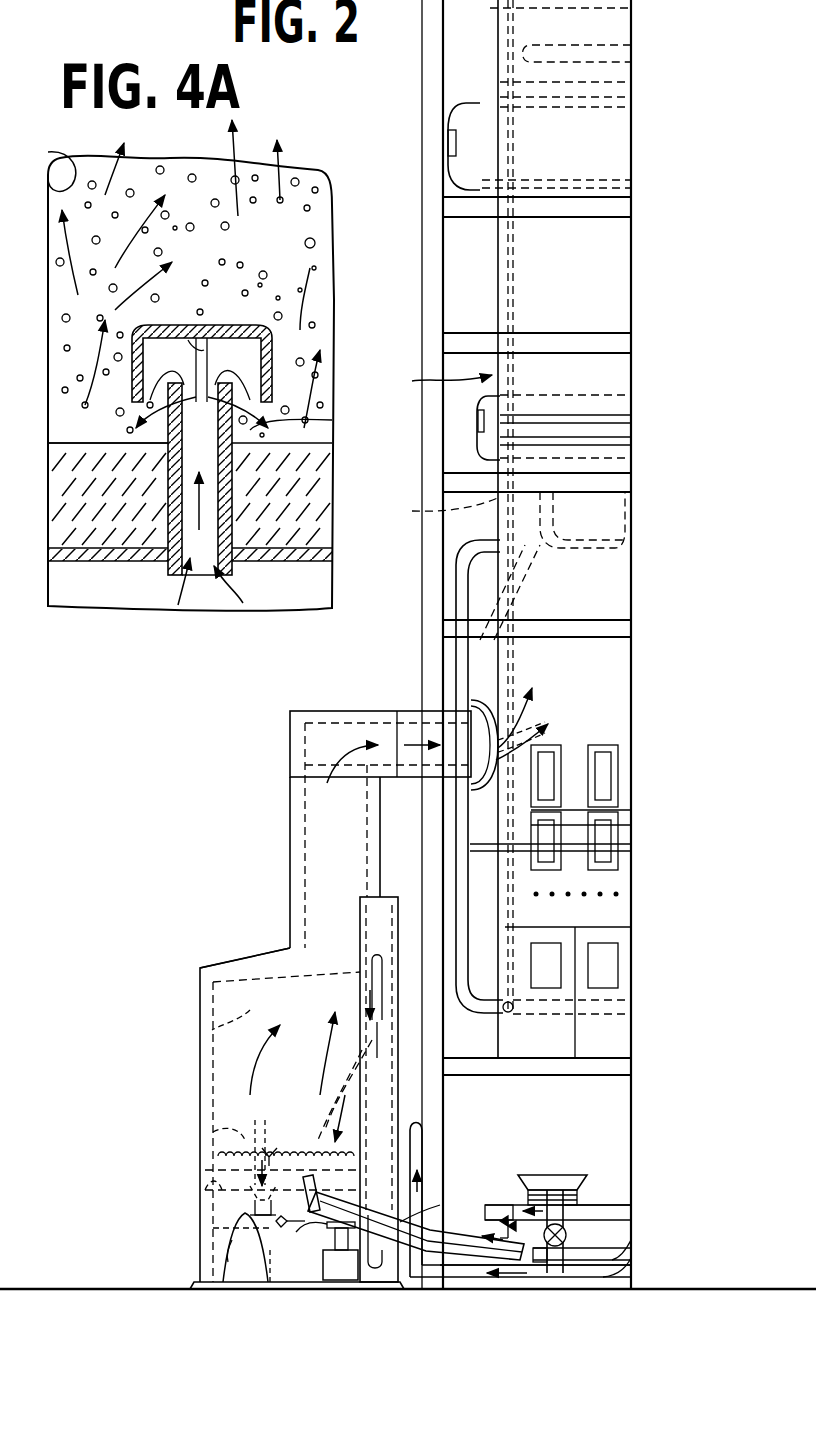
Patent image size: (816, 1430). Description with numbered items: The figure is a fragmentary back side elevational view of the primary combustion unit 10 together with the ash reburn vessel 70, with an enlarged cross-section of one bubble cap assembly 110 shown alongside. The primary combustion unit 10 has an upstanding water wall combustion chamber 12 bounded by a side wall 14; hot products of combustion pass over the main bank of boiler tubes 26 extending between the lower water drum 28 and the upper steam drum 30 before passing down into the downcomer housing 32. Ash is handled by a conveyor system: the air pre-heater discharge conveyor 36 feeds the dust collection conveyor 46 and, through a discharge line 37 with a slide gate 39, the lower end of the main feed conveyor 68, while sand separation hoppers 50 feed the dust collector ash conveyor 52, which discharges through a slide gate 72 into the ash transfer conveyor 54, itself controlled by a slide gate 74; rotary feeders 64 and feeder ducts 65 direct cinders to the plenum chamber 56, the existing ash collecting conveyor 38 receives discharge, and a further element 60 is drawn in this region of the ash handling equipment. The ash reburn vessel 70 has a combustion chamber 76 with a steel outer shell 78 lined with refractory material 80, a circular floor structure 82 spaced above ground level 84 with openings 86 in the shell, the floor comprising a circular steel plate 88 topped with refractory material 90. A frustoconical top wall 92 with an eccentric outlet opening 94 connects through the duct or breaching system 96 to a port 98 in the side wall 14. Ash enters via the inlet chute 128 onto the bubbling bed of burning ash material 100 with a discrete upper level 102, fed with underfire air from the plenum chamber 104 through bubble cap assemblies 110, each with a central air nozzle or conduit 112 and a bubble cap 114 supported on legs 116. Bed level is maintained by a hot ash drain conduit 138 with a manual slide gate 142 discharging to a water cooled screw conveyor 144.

In FIG. 2, the primary combustion unit 10 is at (432, 548).
In FIG. 2, the water wall combustion chamber 12 is at (437, 381).
In FIG. 2, the side wall 14 is at (503, 566).
In FIG. 2, the main bank of boiler tubes 26 is at (570, 298).
In FIG. 2, the lower water drum 28 is at (478, 410).
In FIG. 2, the upper steam drum 30 is at (445, 182).
In FIG. 2, the downcomer housing 32 is at (597, 672).
In FIG. 2, the air pre-heater discharge conveyor 36 is at (372, 1165).
In FIG. 2, the discharge line 37 is at (322, 1220).
In FIG. 2, the ash collecting conveyor 38 is at (325, 1267).
In FIG. 2, the slide gate 39 is at (342, 1254).
In FIG. 2, the dust collection conveyor 46 is at (618, 1250).
In FIG. 2, the sand separation hopper 50 is at (562, 1185).
In FIG. 2, the dust collector ash conveyor 52 is at (618, 1215).
In FIG. 2, the ash transfer conveyor 54 is at (430, 1220).
In FIG. 2, the plenum chamber 56 is at (612, 1280).
In FIG. 2, the riser pipe 60 is at (413, 1160).
In FIG. 2, the rotary feeder 64 is at (568, 1234).
In FIG. 2, the feeder duct 65 is at (578, 1210).
In FIG. 2, the main feed conveyor 68 is at (392, 1042).
In FIG. 2, the ash reburn vessel 70 is at (200, 1088).
In FIG. 2, the slide gate 72 is at (507, 1216).
In FIG. 2, the slide gate 74 is at (428, 1228).
In FIG. 2, the combustion chamber 76 is at (298, 1095).
In FIG. 2, the steel outer shell 78 is at (234, 1217).
In FIG. 2, the refractory material 80 is at (236, 1007).
In FIG. 4A, the circular floor structure 82 is at (85, 435).
In FIG. 2, the circular floor structure 82 is at (213, 1132).
In FIG. 2, the ground level 84 is at (58, 1289).
In FIG. 2, the openings 86 is at (230, 1260).
In FIG. 4A, the circular steel plate 88 is at (250, 566).
In FIG. 4A, the refractory material 90 is at (85, 500).
In FIG. 2, the top wall 92 is at (253, 962).
In FIG. 2, the outlet opening 94 is at (292, 1045).
In FIG. 2, the duct or breaching system 96 is at (335, 843).
In FIG. 2, the port 98 is at (548, 720).
In FIG. 4A, the bubbling bed of burning ash material 100 is at (95, 297).
In FIG. 4A, the upper level 102 is at (170, 374).
In FIG. 4A, the plenum chamber 104 is at (153, 597).
In FIG. 2, the plenum chamber 104 is at (205, 1190).
In FIG. 4A, the bubble cap assembly 110 is at (207, 310).
In FIG. 4A, the central air nozzle or conduit 112 is at (233, 489).
In FIG. 4A, the bubble cap 114 is at (333, 330).
In FIG. 4A, the legs 116 is at (180, 345).
In FIG. 2, the inlet chute 128 is at (286, 1172).
In FIG. 2, the hot ash drain conduit 138 is at (271, 1169).
In FIG. 2, the manual slide gate 142 is at (250, 1150).
In FIG. 2, the water cooled screw conveyor 144 is at (213, 1228).